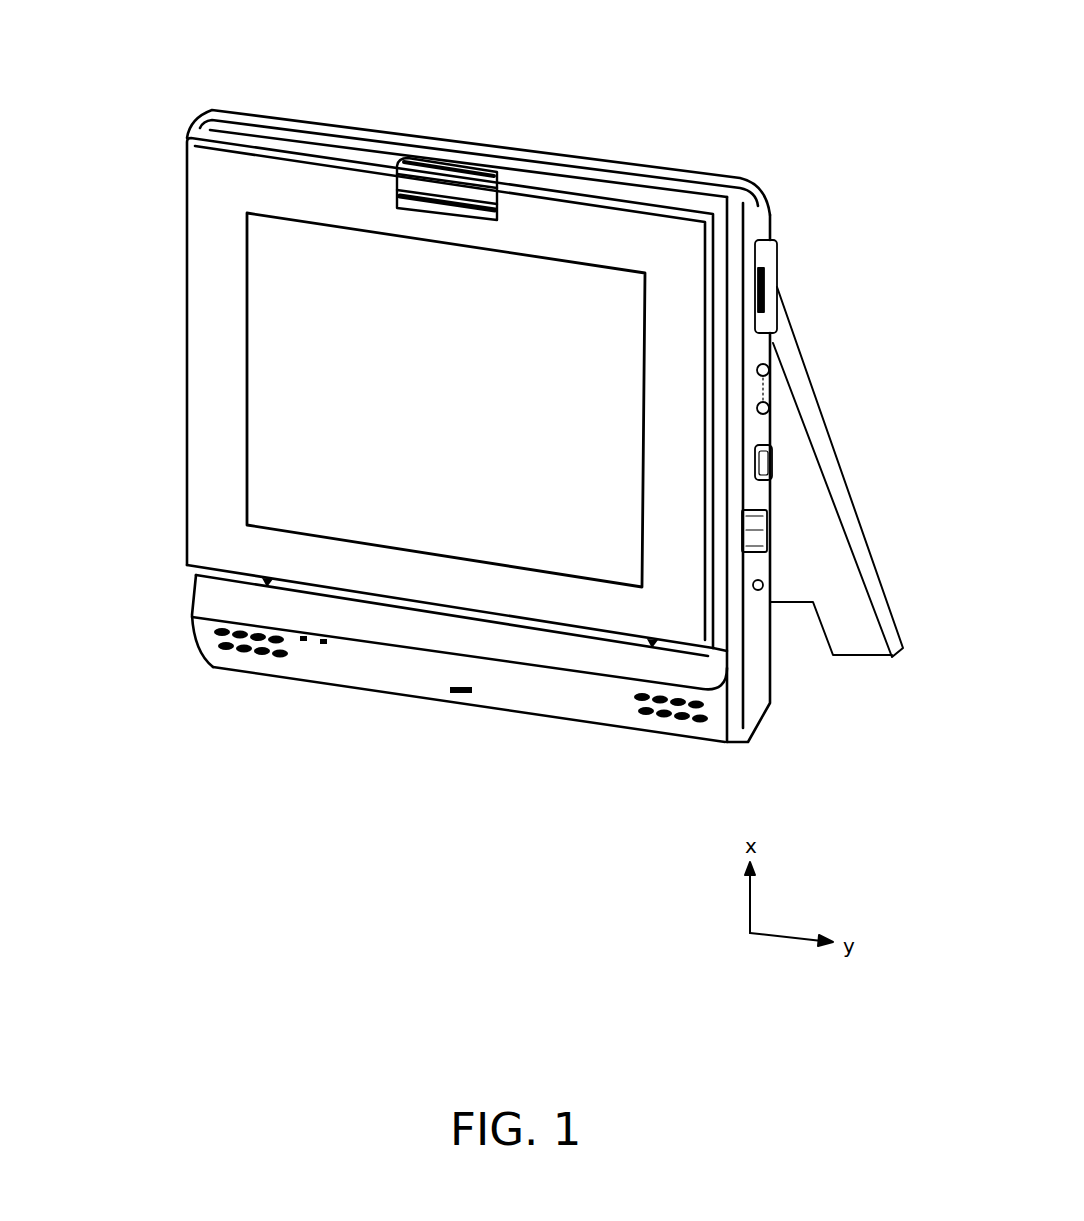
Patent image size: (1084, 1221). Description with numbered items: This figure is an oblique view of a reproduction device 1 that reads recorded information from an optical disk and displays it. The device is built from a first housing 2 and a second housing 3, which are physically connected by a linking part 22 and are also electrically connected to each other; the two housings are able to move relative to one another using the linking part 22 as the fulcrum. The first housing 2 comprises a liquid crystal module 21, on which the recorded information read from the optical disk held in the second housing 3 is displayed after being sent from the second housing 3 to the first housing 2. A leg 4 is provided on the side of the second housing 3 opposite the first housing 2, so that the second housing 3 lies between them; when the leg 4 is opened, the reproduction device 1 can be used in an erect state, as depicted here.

The reproduction device 1 is at (238, 74).
The first housing 2 is at (207, 208).
The liquid crystal module 21 is at (263, 358).
The linking part 22 is at (438, 173).
The second housing 3 is at (347, 688).
The leg 4 is at (865, 558).